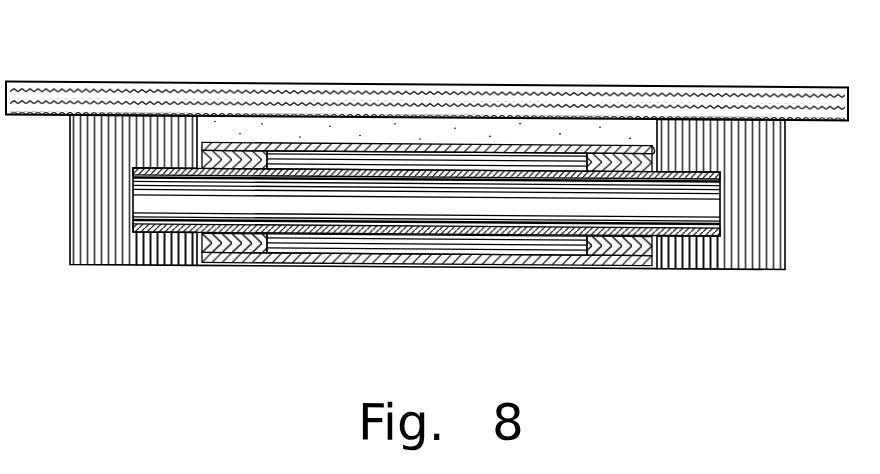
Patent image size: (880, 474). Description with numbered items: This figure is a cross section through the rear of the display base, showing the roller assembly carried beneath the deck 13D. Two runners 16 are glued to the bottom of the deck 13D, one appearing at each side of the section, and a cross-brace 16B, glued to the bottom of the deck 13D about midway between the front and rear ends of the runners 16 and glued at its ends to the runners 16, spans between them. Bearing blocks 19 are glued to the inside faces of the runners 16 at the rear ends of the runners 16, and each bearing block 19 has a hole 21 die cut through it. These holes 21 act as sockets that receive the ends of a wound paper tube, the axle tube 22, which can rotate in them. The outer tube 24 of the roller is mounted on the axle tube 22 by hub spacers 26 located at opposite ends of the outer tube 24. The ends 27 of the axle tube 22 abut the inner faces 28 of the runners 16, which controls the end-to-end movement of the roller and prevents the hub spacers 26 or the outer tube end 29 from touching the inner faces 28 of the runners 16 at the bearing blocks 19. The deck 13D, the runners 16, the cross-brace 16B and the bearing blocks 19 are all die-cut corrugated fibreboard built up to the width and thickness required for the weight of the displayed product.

The deck 13D is at (747, 82).
The runners 16 is at (69, 186).
The cross-brace 16B is at (372, 127).
The bearing blocks 19 is at (143, 262).
The hole 21 is at (168, 216).
The axle tube 22 is at (392, 235).
The outer tube 24 is at (463, 248).
The hub spacers 26 is at (233, 256).
The ends of the axle 27 is at (737, 224).
The inner faces of the runners 28 is at (133, 203).
The outer tube end 29 is at (657, 145).